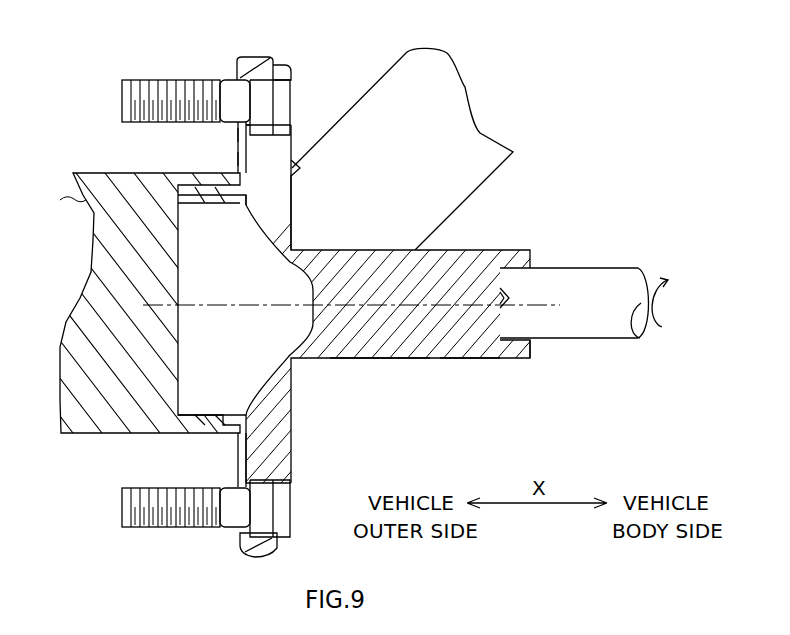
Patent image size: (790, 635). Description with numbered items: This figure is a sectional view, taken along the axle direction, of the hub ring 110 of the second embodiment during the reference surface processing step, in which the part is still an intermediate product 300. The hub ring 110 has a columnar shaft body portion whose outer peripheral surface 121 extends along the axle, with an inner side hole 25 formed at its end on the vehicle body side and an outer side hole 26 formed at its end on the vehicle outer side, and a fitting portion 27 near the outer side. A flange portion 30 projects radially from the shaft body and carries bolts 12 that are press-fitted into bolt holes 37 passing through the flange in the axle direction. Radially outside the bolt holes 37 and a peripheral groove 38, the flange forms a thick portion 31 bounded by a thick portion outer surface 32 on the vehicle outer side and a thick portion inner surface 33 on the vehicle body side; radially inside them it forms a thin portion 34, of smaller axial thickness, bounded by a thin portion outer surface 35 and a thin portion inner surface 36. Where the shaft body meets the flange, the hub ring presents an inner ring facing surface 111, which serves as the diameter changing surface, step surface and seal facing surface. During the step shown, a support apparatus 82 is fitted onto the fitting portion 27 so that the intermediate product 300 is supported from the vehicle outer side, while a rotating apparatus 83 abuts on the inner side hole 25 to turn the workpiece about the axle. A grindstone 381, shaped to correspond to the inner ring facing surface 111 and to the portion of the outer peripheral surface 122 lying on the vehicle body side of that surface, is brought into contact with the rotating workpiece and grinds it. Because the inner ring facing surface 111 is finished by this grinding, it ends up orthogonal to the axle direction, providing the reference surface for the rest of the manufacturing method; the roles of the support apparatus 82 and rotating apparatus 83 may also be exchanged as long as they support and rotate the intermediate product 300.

The bolts 12 is at (291, 102).
The inner side hole 25 is at (523, 333).
The outer side hole 26 is at (178, 414).
The fitting portion 27 is at (190, 187).
The flange portion 30 is at (209, 93).
The thick portion 31 is at (233, 60).
The thick portion outer surface 32 is at (232, 80).
The thick portion inner surface 33 is at (280, 58).
The thin portion 34 is at (238, 159).
The thin portion outer surface 35 is at (238, 136).
The thin portion inner surface 36 is at (313, 155).
The bolt holes 37 is at (291, 73).
The peripheral groove 38 is at (238, 487).
The support apparatus 82 is at (78, 196).
The rotating apparatus 83 is at (627, 266).
The hub ring 110 is at (531, 354).
The inner ring facing surface 111 is at (294, 214).
The outer peripheral surface 121 is at (443, 360).
The outer peripheral surface 122 is at (395, 360).
The intermediate product 300 is at (531, 254).
The grindstone 381 is at (460, 55).